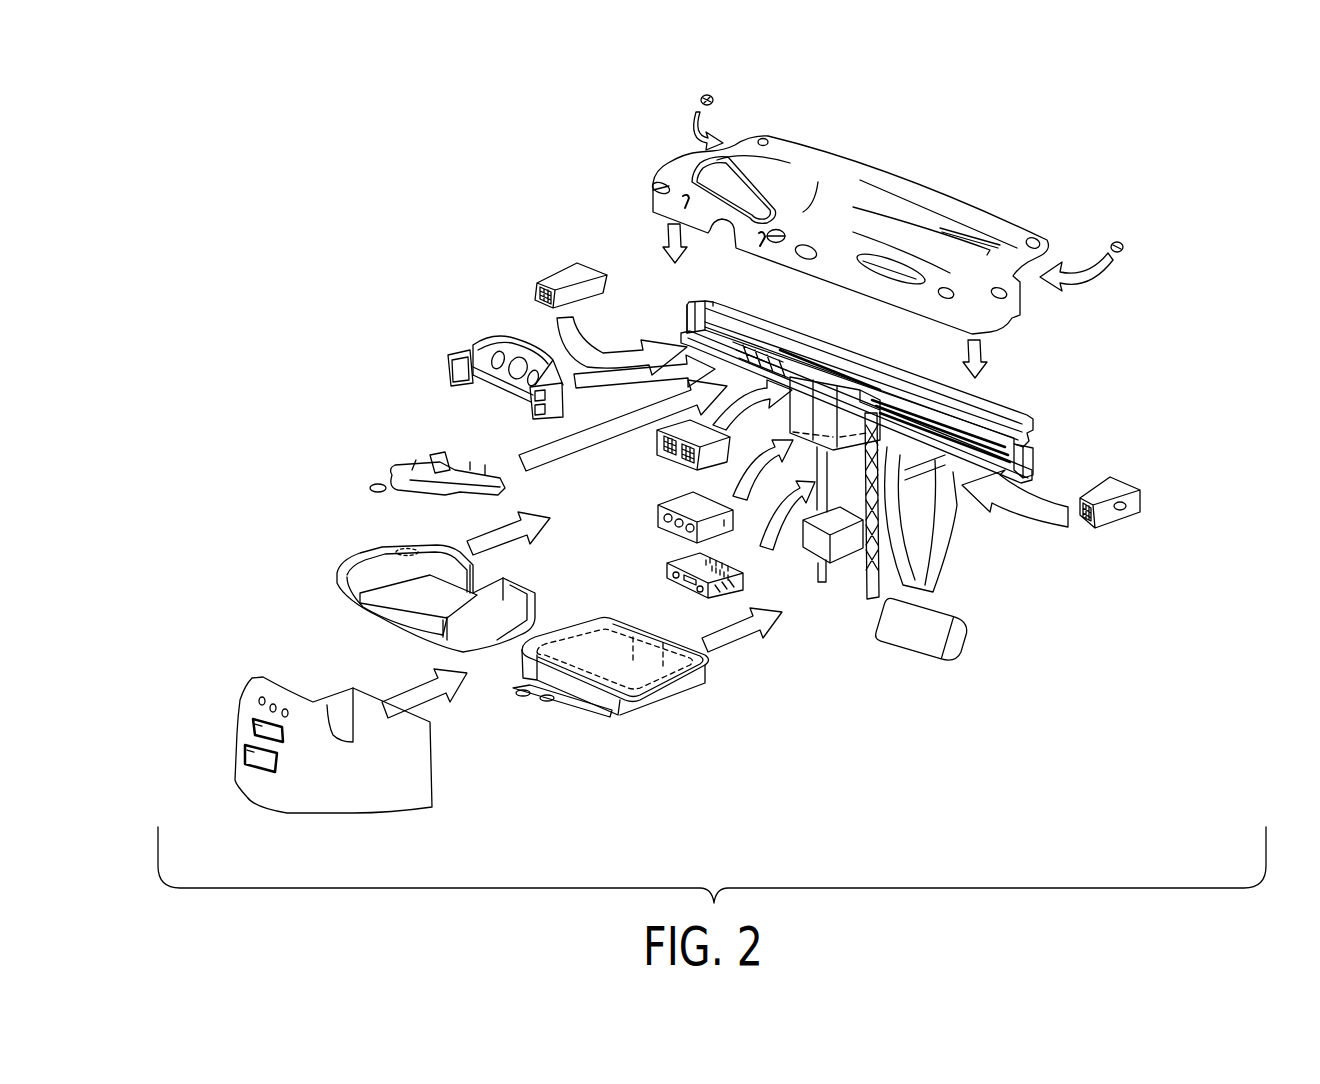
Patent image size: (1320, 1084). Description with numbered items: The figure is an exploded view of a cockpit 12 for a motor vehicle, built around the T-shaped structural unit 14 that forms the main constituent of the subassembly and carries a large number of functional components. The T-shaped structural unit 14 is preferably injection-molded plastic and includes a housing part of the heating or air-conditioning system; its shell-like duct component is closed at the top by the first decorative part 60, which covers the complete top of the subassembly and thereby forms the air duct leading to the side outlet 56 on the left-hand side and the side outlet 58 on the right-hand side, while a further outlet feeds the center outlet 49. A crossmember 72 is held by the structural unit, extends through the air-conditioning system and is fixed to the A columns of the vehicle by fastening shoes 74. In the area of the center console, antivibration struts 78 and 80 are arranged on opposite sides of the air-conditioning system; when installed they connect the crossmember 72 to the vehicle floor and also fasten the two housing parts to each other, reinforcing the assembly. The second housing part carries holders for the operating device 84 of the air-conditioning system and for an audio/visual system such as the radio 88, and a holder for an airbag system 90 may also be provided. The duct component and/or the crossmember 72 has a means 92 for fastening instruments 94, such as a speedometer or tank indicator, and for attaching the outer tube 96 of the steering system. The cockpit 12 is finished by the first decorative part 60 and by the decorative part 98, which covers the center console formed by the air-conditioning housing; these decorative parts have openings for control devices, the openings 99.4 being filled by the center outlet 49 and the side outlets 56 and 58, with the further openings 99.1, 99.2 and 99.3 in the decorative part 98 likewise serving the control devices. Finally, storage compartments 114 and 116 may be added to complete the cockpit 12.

The cockpit 12 is at (1063, 170).
The T-shaped structural unit 14 is at (1064, 393).
The center outlet 49 is at (662, 452).
The side outlet 56 is at (568, 277).
The side outlet 58 is at (1120, 517).
The first decorative part 60 is at (850, 173).
The crossmember 72 is at (1005, 483).
The fastening shoes 74 is at (1038, 452).
The antivibration strut 78 is at (863, 588).
The antivibration strut 80 is at (817, 570).
The operating device 84 is at (658, 528).
The radio 88 is at (668, 592).
The airbag system 90 is at (958, 643).
The means for fastening 92 is at (737, 330).
The instruments 94 is at (487, 343).
The outer tube 96 is at (407, 473).
The decorative part 98 is at (332, 800).
The holes 99.1 is at (258, 702).
The upper slot 99.2 is at (252, 727).
The lower slot 99.3 is at (246, 752).
The openings 99.4 is at (655, 190).
The storage compartment 114 is at (635, 715).
The storage compartment 116 is at (363, 577).